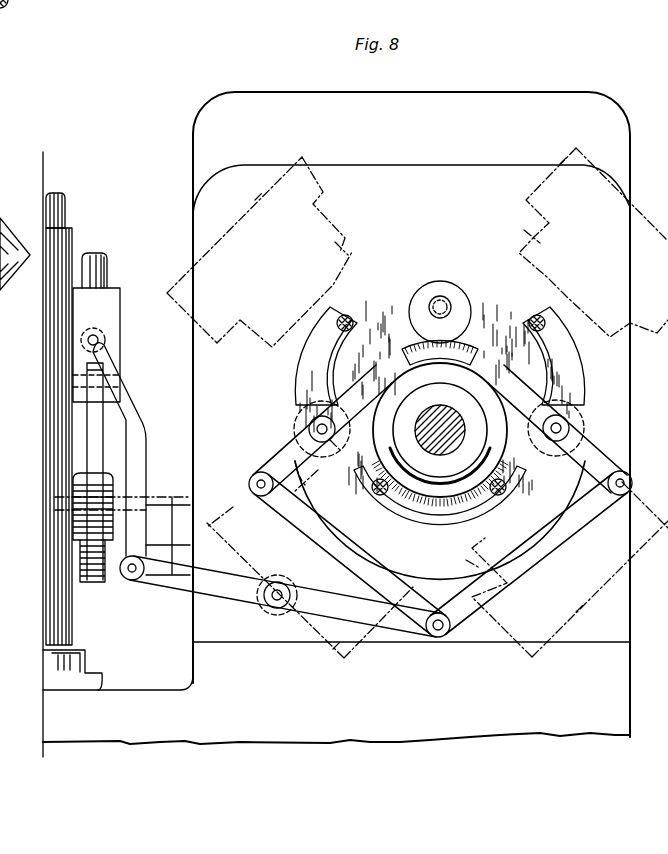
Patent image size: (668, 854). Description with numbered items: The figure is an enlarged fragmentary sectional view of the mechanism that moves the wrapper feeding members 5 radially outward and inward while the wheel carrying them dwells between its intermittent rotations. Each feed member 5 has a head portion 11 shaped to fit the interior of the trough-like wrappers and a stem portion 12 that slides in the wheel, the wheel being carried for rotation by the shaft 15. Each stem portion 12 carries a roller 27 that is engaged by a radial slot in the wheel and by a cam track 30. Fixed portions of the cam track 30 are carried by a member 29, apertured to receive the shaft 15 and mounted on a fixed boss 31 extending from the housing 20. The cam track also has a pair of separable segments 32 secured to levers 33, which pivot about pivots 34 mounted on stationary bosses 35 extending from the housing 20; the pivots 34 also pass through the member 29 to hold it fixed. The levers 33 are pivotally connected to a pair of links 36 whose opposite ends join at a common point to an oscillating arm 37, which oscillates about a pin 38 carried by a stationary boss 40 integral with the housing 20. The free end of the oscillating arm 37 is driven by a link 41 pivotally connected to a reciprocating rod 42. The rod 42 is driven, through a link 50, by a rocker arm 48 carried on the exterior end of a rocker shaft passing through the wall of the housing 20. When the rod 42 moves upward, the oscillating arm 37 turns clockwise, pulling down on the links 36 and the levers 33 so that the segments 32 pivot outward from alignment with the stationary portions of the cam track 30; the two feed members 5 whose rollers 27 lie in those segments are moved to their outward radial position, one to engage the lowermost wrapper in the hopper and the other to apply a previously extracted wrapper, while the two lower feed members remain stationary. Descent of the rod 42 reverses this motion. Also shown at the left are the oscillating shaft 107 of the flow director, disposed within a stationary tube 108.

The wrapper feeding member 5 is at (251, 203).
The head portion 11 is at (336, 186).
The stem portion 12 is at (355, 252).
The shaft 15 is at (435, 410).
The housing 20 is at (420, 100).
The roller 27 is at (348, 316).
The member 29 is at (392, 298).
The cam track 30 is at (466, 340).
The fixed boss 31 is at (438, 282).
The separable segment 32 is at (333, 355).
The lever 33 is at (280, 453).
The pivot 34 is at (316, 429).
The stationary boss 35 is at (302, 413).
The link 36 is at (318, 538).
The oscillating arm 37 is at (212, 590).
The pin 38 is at (272, 601).
The stationary boss 40 is at (280, 609).
The link 41 is at (135, 454).
The reciprocating rod 42 is at (108, 298).
The rocker arm 48 is at (97, 588).
The link 50 is at (96, 440).
The oscillating shaft 107 is at (68, 206).
The stationary tube 108 is at (69, 237).